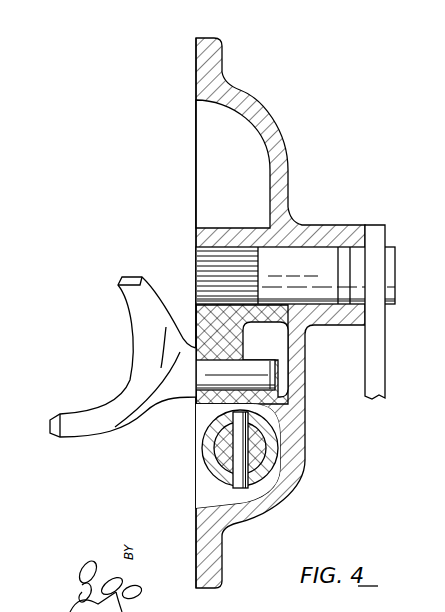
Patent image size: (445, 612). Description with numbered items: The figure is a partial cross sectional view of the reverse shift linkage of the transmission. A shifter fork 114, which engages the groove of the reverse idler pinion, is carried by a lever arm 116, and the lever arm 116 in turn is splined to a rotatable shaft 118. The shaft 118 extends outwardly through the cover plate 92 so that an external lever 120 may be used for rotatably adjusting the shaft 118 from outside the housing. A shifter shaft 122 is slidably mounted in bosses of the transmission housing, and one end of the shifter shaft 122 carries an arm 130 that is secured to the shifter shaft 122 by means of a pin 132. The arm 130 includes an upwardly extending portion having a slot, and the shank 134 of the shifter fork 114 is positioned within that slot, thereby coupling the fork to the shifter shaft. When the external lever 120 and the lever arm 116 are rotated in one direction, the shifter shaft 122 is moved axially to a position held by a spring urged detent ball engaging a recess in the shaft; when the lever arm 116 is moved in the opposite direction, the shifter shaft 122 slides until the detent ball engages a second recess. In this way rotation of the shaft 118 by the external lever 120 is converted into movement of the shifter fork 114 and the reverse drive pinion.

The cover plate 92 is at (288, 485).
The shifter fork 114 is at (117, 408).
The lever arm 116 is at (212, 330).
The rotatable shaft 118 is at (280, 263).
The external lever 120 is at (380, 328).
The shifter shaft 122 is at (262, 436).
The arm 130 is at (273, 416).
The pin 132 is at (240, 489).
The shank 134 is at (243, 373).